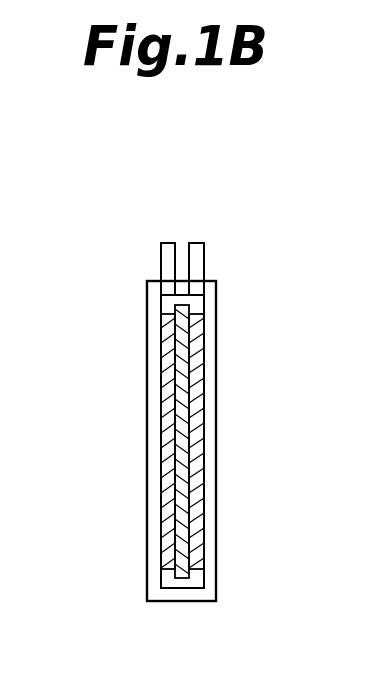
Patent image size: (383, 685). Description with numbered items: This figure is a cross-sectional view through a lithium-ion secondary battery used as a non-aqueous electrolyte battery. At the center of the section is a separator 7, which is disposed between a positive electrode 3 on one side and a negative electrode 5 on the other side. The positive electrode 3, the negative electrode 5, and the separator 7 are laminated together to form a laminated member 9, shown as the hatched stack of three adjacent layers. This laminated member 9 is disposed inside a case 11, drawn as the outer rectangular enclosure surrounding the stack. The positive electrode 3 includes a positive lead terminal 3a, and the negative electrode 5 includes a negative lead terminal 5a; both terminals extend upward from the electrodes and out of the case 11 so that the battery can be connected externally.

The positive electrode 3 is at (205, 417).
The positive lead terminal 3a is at (204, 258).
The negative electrode 5 is at (162, 400).
The negative lead terminal 5a is at (161, 258).
The separator 7 is at (183, 375).
The laminated member 9 is at (200, 479).
The case 11 is at (147, 529).